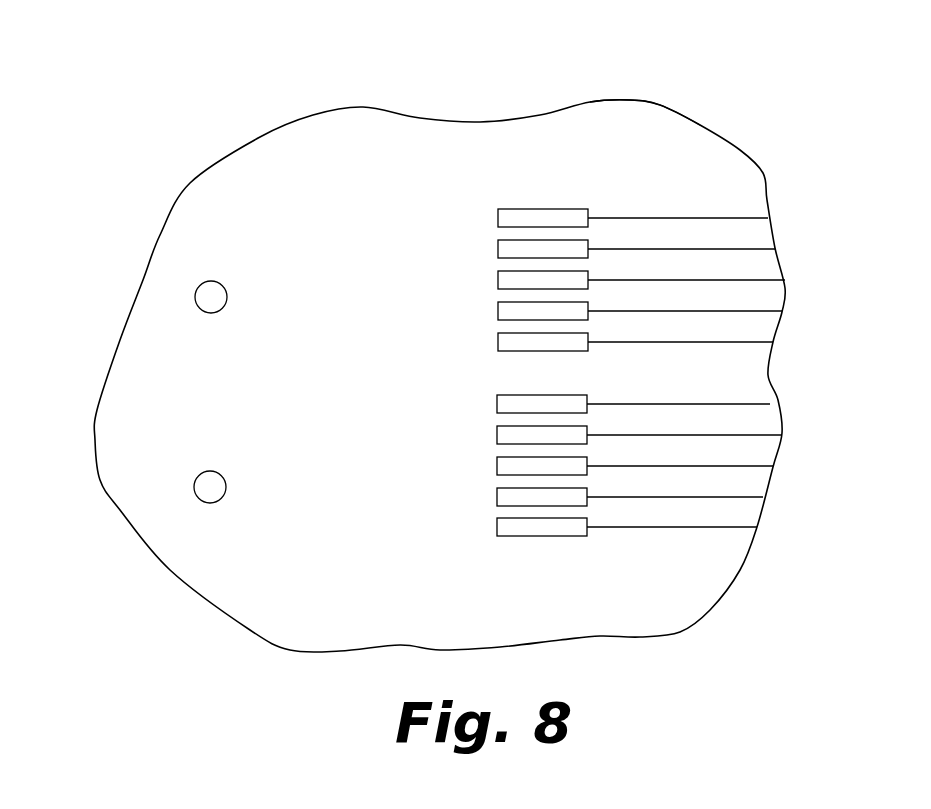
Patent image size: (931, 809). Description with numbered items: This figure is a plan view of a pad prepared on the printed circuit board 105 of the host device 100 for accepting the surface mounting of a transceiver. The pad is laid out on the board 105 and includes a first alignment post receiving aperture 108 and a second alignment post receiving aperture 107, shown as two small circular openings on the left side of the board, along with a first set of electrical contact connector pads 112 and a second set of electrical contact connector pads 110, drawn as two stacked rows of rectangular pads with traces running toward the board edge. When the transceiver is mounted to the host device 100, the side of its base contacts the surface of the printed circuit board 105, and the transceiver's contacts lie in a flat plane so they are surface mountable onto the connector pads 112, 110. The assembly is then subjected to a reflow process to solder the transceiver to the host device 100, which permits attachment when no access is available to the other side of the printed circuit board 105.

The host device 100 is at (457, 121).
The printed circuit board 105 is at (590, 102).
The second alignment post receiving aperture 107 is at (197, 297).
The first alignment post receiving aperture 108 is at (195, 483).
The second set of electrical contact connector pads 110 is at (565, 206).
The first set of electrical contact connector pads 112 is at (529, 538).